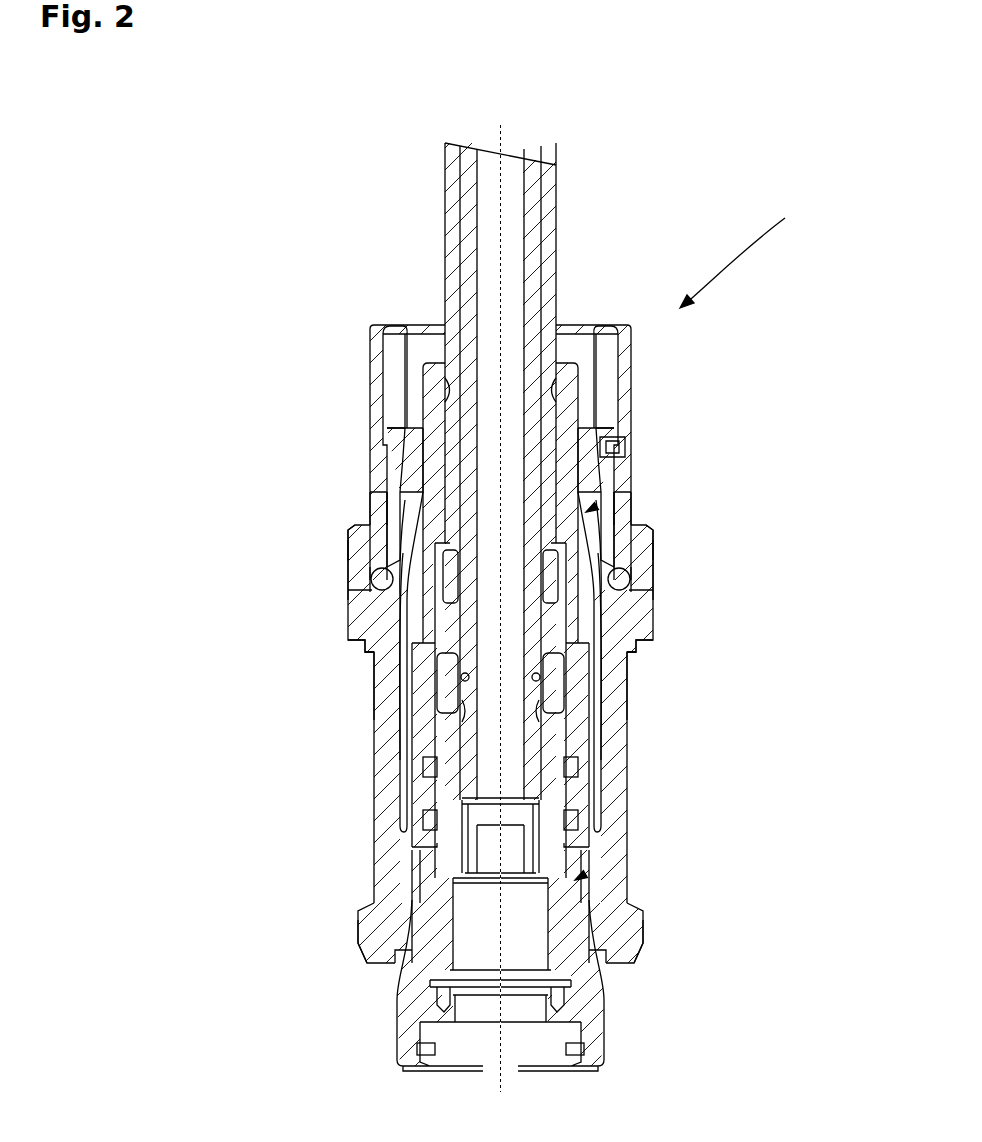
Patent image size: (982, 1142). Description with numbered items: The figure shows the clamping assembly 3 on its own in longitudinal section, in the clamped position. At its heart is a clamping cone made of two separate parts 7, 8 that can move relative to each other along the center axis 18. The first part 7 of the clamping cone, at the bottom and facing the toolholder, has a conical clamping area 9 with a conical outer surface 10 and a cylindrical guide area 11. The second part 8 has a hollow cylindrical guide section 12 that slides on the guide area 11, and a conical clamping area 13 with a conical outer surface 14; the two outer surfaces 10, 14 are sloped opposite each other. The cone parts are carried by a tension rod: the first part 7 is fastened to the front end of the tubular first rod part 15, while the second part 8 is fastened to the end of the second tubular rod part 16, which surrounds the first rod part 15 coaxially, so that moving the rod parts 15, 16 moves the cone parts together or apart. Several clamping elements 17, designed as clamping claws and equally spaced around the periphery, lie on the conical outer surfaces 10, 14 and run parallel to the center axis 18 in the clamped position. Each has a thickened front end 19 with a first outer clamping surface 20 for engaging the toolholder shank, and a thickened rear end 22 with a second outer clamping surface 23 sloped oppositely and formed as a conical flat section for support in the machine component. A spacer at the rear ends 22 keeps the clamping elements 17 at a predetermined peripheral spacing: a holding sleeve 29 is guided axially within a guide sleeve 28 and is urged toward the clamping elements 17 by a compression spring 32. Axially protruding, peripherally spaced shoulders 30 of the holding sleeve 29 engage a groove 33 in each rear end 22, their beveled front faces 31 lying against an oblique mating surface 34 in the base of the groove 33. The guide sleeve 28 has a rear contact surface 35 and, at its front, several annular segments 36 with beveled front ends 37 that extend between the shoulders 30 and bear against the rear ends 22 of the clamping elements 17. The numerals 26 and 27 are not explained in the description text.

The clamping assembly 3 is at (741, 249).
The first part of the clamping cone 7 is at (575, 880).
The second part of the clamping cone 8 is at (586, 512).
The conical clamping area 9 is at (587, 997).
The conical outer surface 10 is at (392, 983).
The cylindrical guide area 11 is at (450, 752).
The hollow cylindrical guide section 12 is at (575, 788).
The conical clamping area 13 is at (592, 568).
The conical outer surface 14 is at (407, 600).
The first rod part 15 is at (472, 270).
The second rod part 16 is at (548, 296).
The clamping elements 17 is at (390, 815).
The center axis 18 is at (503, 233).
The thickened front end 19 is at (620, 937).
The first outer clamping surface 20 is at (362, 906).
The thickened rear end 22 is at (655, 553).
The second outer clamping surface 23 is at (637, 646).
The insert cylinder 26 is at (408, 945).
The housing wedge region 27 is at (612, 620).
The guide sleeve 28 is at (378, 393).
The holding sleeve 29 is at (393, 468).
The shoulders 30 is at (394, 502).
The beveled front faces 31 is at (392, 577).
The compression spring 32 is at (606, 407).
The groove 33 is at (358, 553).
The oblique mating surface 34 is at (372, 590).
The rear contact surface 35 is at (392, 323).
The annular segments 36 is at (625, 508).
The beveled front ends 37 is at (640, 558).